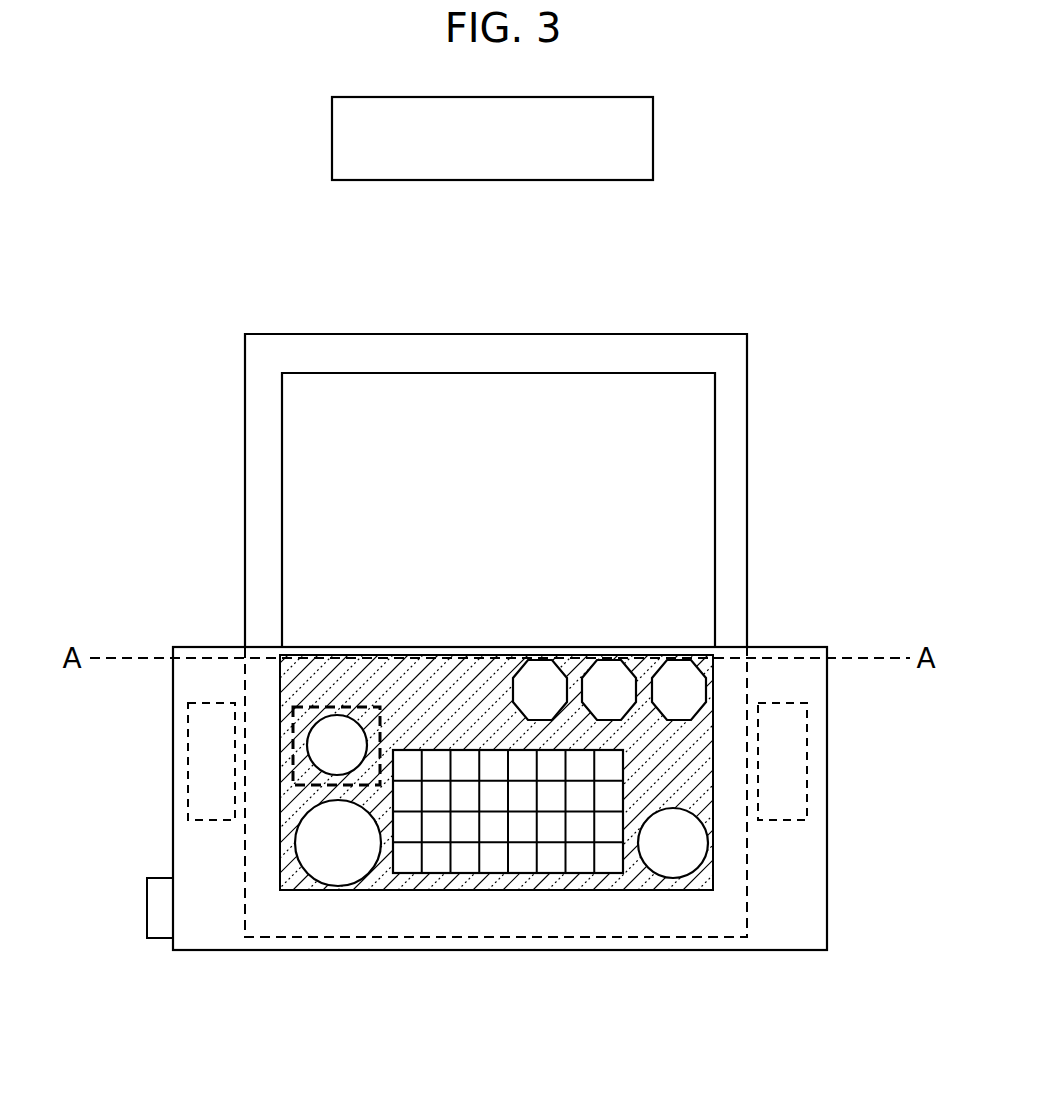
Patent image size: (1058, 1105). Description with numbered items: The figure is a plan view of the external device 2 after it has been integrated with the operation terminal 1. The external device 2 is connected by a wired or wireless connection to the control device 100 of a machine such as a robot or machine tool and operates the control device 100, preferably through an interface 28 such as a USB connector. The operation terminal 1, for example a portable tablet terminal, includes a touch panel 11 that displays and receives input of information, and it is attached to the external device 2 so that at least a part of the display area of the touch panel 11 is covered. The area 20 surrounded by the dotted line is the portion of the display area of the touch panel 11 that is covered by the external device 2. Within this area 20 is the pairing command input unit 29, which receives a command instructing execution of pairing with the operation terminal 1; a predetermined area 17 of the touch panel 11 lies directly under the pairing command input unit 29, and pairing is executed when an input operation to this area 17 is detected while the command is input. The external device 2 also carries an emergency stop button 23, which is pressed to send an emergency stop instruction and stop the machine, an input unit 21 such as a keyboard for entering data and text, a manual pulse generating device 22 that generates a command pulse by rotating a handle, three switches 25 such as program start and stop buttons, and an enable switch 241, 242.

The control device 100 is at (653, 134).
The operation terminal 1 is at (473, 333).
The touch panel 11 is at (715, 440).
The external device 2 is at (783, 647).
The interface 28 is at (162, 923).
The enable switch 242 is at (208, 717).
The enable switch 241 is at (783, 805).
The area 20 is at (440, 695).
The switches 25 is at (697, 637).
The input unit 21 is at (495, 858).
The predetermined area 17 is at (293, 707).
The pairing command input unit 29 is at (340, 728).
The manual pulse generating device 22 is at (343, 867).
The emergency stop button 23 is at (673, 853).